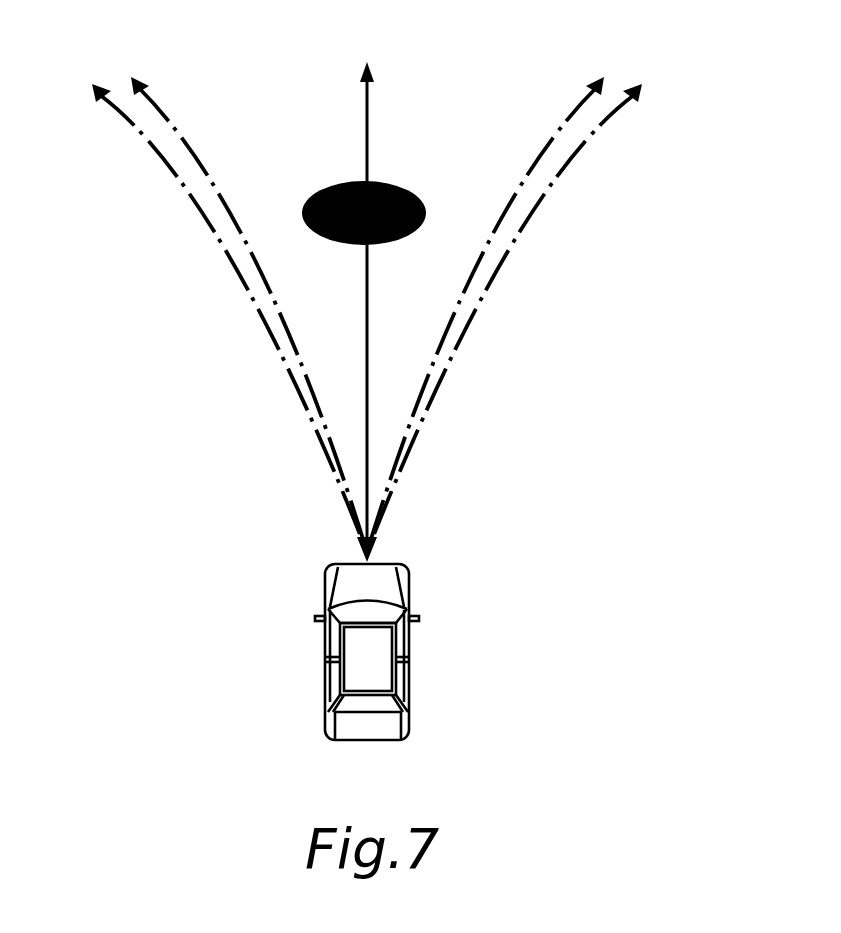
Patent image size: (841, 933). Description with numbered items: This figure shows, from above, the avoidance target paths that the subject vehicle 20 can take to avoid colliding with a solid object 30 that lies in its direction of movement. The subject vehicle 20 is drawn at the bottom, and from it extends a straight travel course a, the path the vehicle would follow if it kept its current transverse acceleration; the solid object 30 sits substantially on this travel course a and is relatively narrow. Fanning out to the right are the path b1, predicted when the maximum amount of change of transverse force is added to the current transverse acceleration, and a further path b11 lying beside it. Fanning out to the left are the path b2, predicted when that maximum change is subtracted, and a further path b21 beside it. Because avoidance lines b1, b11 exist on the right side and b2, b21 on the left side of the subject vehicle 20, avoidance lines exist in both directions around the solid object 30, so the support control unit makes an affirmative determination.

The subject vehicle 20 is at (409, 653).
The solid object 30 is at (346, 183).
The path a is at (367, 293).
The path b1 is at (530, 312).
The path b2 is at (212, 303).
The path b11 is at (512, 293).
The path b21 is at (232, 292).